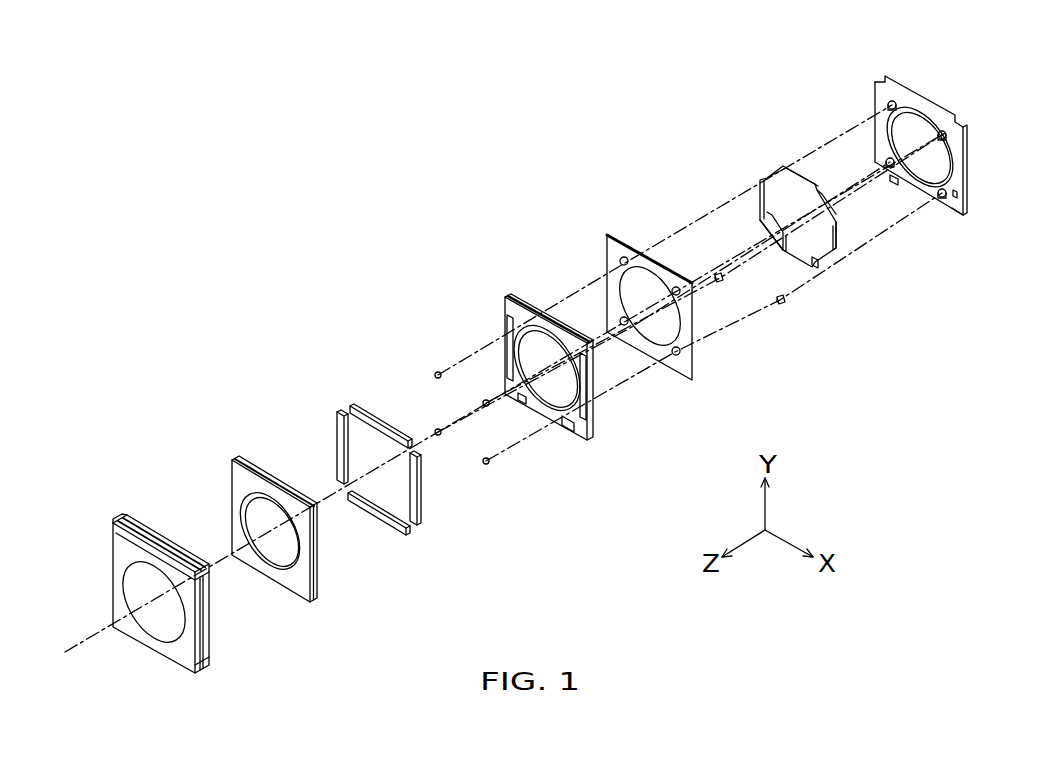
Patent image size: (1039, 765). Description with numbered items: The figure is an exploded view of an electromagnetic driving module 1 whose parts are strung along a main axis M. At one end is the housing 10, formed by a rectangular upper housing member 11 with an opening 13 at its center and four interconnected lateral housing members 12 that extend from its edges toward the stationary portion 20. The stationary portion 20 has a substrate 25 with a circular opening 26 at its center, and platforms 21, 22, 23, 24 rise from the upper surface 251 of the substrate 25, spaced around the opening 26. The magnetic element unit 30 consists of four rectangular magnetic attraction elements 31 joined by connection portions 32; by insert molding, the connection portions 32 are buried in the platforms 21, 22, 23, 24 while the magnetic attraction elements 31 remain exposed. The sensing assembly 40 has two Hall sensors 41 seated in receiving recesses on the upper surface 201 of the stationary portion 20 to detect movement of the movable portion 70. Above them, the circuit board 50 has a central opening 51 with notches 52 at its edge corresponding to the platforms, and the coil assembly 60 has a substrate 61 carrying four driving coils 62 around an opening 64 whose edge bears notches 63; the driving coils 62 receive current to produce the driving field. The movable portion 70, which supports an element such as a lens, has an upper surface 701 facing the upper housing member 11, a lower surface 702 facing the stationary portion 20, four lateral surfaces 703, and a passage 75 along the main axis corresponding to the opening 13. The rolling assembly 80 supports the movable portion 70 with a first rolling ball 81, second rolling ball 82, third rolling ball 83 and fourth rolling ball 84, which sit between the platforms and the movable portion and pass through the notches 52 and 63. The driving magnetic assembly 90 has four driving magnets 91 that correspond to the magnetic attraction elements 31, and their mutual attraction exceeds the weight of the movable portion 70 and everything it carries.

The electromagnetic driving module 1 is at (213, 194).
The housing 10 is at (100, 497).
The upper housing member 11 is at (118, 553).
The lateral housing members 12 is at (152, 540).
The opening 13 is at (165, 625).
The stationary portion 20 is at (817, 73).
The platform 21 is at (887, 104).
The platform 22 is at (948, 138).
The platform 23 is at (953, 193).
The platform 24 is at (887, 162).
The substrate 25 is at (919, 92).
The opening 26 is at (927, 170).
The upper surface 201 is at (938, 120).
The upper surface 251 is at (955, 167).
The magnetic element unit 30 is at (727, 125).
The magnetic attraction elements 31 is at (790, 262).
The connection portions 32 is at (818, 265).
The sensing assembly 40 is at (797, 318).
The Hall sensors 41 is at (717, 277).
The circuit board 50 is at (585, 210).
The opening 51 is at (640, 298).
The notches 52 is at (684, 303).
The coil assembly 60 is at (474, 275).
The substrate 61 is at (518, 302).
The driving coils 62 is at (590, 418).
The notches 63 is at (588, 354).
The opening 64 is at (558, 388).
The movable portion 70 is at (215, 432).
The upper surface 701 is at (240, 480).
The lower surface 702 is at (275, 477).
The lateral surfaces 703 is at (316, 582).
The passage 75 is at (285, 552).
The rolling assembly 80 is at (388, 328).
The first rolling ball 81 is at (436, 373).
The second rolling ball 82 is at (483, 403).
The third rolling ball 83 is at (487, 464).
The fourth rolling ball 84 is at (438, 435).
The driving magnetic assembly 90 is at (318, 370).
The driving magnets 91 is at (408, 527).